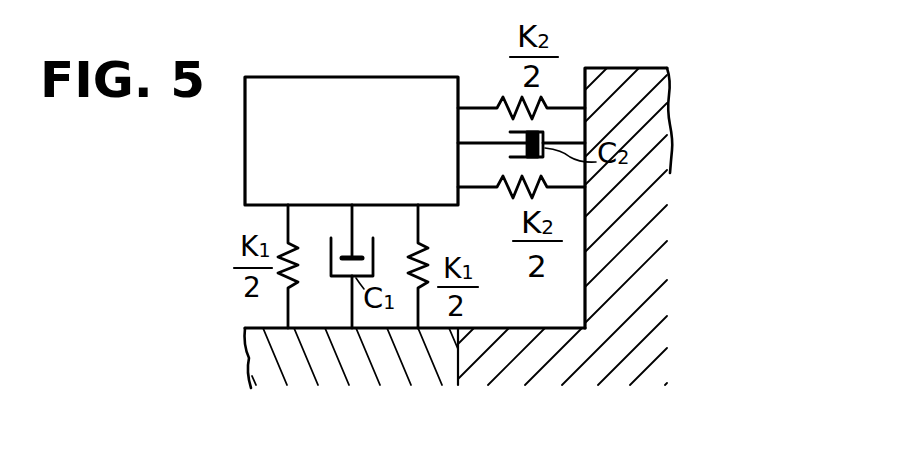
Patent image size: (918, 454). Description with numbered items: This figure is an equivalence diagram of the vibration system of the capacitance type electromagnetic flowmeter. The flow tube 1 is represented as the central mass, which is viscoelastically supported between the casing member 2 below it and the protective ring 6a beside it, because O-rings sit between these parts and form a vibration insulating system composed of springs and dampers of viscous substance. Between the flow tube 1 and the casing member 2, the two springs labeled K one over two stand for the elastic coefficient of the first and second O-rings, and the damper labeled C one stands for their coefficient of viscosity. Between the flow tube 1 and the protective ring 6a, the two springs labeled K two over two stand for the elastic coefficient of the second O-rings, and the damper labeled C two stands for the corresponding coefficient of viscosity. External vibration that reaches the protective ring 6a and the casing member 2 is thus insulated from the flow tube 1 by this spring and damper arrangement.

The flow tube 1 is at (330, 88).
The casing member 2 is at (388, 353).
The protective ring 6a is at (643, 80).